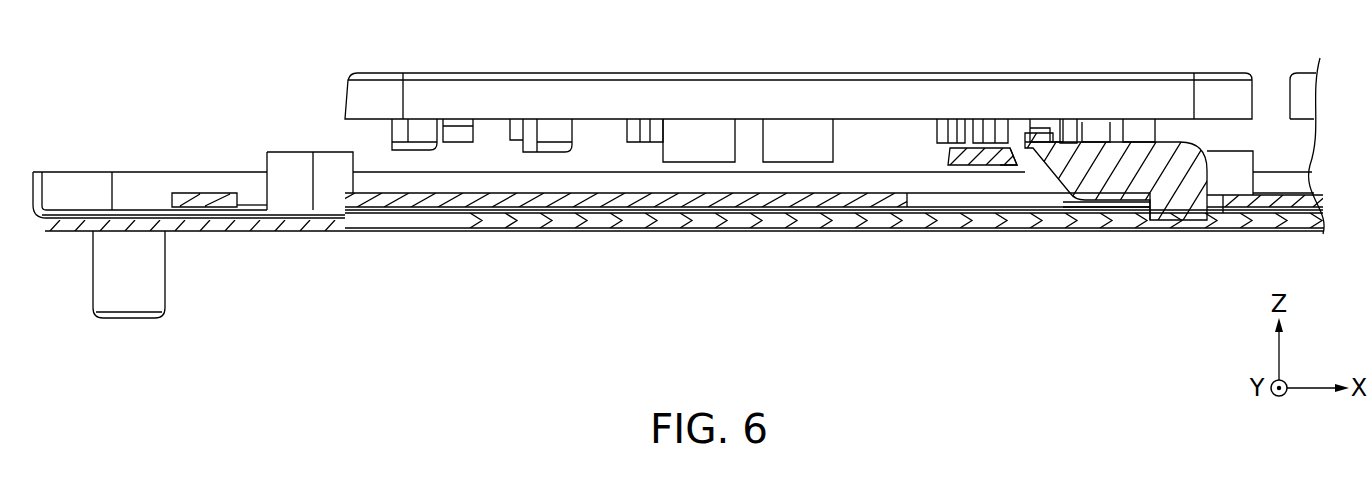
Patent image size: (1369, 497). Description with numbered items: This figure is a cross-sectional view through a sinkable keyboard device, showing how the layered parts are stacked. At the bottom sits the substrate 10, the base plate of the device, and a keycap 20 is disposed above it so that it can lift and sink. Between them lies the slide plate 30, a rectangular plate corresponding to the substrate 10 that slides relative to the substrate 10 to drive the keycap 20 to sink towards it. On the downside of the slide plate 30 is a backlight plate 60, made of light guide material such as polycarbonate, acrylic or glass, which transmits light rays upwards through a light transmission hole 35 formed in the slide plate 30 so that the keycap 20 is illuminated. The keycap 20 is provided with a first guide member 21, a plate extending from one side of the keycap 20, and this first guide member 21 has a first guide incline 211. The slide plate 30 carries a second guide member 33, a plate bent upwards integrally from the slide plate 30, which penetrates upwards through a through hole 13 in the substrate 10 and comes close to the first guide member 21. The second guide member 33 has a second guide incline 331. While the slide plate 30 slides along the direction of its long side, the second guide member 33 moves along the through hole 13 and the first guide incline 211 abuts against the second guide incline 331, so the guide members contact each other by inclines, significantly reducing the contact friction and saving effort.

The substrate 10 is at (832, 212).
The through hole 13 is at (1213, 197).
The keycap 20 is at (428, 73).
The first guide member 21 is at (967, 152).
The first guide incline 211 is at (1010, 152).
The slide plate 30 is at (882, 207).
The second guide member 33 is at (1113, 177).
The second guide incline 331 is at (1062, 198).
The light transmission hole 35 is at (935, 210).
The backlight plate 60 is at (932, 215).